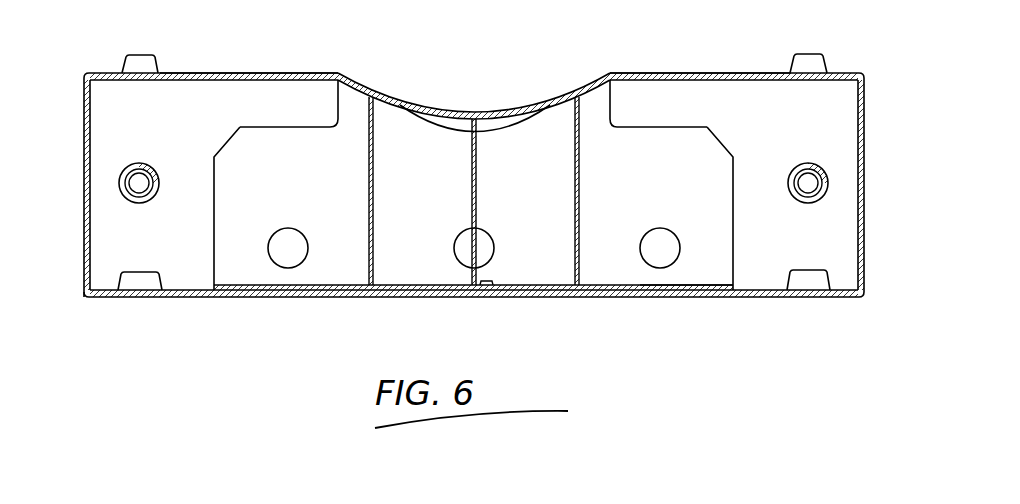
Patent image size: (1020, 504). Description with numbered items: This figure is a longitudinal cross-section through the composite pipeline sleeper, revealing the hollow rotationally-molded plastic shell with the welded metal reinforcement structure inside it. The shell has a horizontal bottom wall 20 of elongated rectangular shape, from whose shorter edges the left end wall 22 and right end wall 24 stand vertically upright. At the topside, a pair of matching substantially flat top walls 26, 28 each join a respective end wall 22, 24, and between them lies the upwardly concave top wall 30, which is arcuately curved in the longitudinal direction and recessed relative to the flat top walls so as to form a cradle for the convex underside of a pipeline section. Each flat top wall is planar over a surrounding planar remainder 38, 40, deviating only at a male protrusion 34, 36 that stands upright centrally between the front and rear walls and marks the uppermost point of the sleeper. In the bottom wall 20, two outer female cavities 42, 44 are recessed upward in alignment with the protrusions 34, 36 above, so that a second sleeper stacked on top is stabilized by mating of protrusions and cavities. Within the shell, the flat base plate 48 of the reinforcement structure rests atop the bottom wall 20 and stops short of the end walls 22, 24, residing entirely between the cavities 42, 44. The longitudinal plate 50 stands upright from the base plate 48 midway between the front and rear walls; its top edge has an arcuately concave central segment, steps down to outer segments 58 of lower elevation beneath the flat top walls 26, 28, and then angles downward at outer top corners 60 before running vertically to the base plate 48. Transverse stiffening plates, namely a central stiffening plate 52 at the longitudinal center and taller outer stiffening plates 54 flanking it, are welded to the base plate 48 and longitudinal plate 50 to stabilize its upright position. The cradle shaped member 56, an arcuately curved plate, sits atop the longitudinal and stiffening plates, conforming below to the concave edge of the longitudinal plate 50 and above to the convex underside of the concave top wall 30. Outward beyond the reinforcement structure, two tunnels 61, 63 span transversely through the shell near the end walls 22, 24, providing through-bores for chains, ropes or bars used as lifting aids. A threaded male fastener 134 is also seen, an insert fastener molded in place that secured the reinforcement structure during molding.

The bottom wall 20 is at (753, 294).
The left end wall 22 is at (86, 172).
The right end wall 24 is at (863, 123).
The substantially flat top wall 26 is at (231, 71).
The substantially flat top wall 28 is at (714, 71).
The upwardly concave top wall 30 is at (462, 108).
The male protrusion 34 is at (137, 63).
The male protrusion 36 is at (807, 58).
The planar remainder 38 is at (273, 72).
The planar remainder 40 is at (752, 72).
The outer female cavity 42 is at (146, 277).
The outer female cavity 44 is at (808, 277).
The base plate 48 is at (702, 288).
The longitudinal plate 50 is at (340, 270).
The central stiffening plate 52 is at (476, 165).
The outer stiffening plate 54 is at (375, 173).
The cradle shaped member 56 is at (438, 116).
The outer segment 58 is at (284, 123).
The outer top corner 60 is at (228, 137).
The tunnel 61 is at (146, 176).
The tunnel 63 is at (808, 177).
The threaded male screw or bolt fastener 134 is at (488, 280).